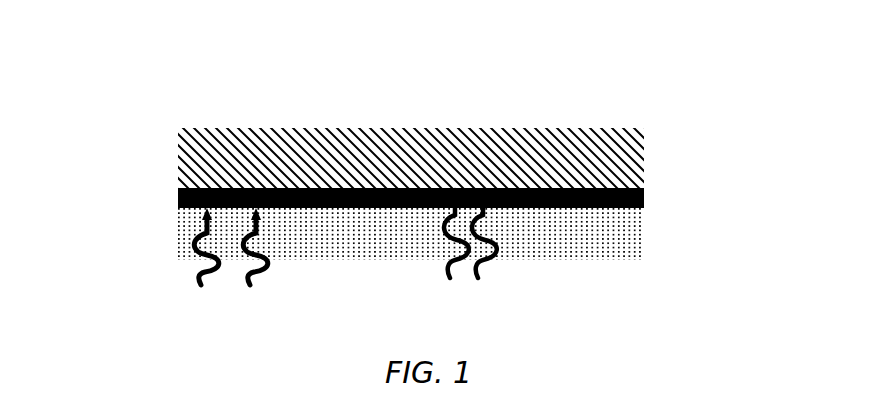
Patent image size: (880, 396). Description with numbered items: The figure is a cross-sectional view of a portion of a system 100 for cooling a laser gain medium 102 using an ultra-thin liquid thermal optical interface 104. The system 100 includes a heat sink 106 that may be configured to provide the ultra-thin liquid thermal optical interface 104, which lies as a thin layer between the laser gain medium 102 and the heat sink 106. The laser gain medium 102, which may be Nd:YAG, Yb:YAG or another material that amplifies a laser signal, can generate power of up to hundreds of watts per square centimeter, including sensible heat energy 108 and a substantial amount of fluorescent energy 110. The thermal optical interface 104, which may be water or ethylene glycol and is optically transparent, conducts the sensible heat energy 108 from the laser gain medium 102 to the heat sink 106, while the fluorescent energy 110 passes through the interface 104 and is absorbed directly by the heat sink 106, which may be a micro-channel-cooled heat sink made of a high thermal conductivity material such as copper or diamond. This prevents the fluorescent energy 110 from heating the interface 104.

The system 100 is at (137, 72).
The laser gain medium 102 is at (645, 230).
The ultra-thin liquid thermal optical interface 104 is at (177, 195).
The heat sink 106 is at (645, 162).
The sensible heat energy 108 is at (180, 270).
The fluorescent energy 110 is at (437, 272).